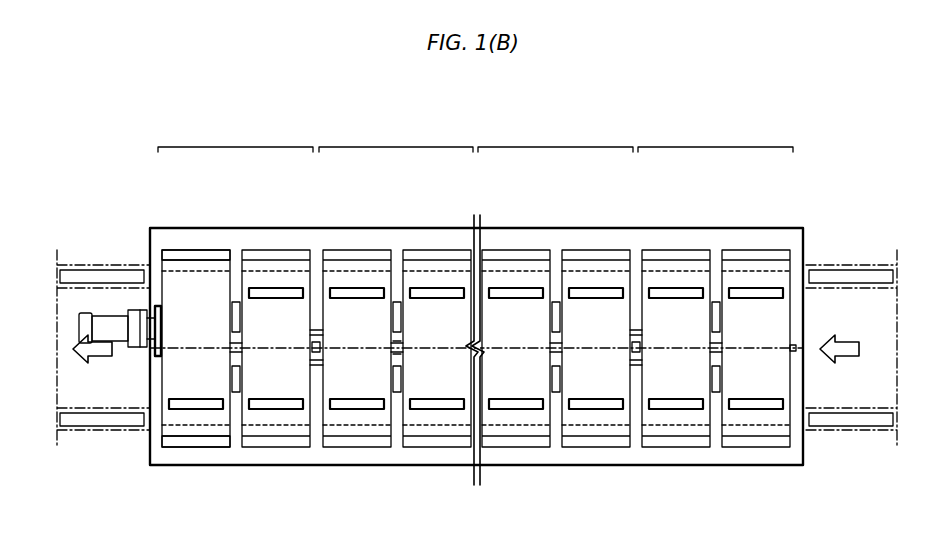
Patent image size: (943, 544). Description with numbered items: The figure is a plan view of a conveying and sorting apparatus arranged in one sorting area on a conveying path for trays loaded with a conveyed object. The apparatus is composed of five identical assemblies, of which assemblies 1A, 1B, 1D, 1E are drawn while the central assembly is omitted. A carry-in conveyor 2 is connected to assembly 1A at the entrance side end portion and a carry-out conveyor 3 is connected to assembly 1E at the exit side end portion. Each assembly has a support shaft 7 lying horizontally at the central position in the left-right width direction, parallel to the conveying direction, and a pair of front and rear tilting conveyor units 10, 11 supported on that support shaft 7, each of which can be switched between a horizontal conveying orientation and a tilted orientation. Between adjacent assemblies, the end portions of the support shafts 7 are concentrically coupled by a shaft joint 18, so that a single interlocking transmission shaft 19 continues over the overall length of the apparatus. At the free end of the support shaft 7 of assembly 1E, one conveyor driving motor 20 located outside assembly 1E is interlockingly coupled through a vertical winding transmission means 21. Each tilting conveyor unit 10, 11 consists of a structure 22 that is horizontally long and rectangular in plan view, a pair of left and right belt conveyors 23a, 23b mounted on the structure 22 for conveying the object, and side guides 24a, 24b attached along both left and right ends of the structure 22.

The assembly 1A is at (715, 138).
The assembly 1B is at (555, 138).
The assembly 1D is at (396, 138).
The assembly 1E is at (235, 138).
The carry-in conveyor 2 is at (873, 312).
The carry-out conveyor 3 is at (90, 266).
The support shaft 7 is at (232, 346).
The tilting conveyor unit 10 is at (281, 248).
The tilting conveyor unit 11 is at (193, 248).
The shaft joint 18 is at (311, 347).
The interlocking transmission shaft 19 is at (396, 358).
The conveyor driving motor 20 is at (118, 338).
The vertical winding transmission means 21 is at (157, 312).
The structure 22 is at (184, 377).
The belt conveyor 23a is at (258, 410).
The belt conveyor 23b is at (293, 286).
The side guide 24a is at (288, 448).
The side guide 24b is at (266, 254).